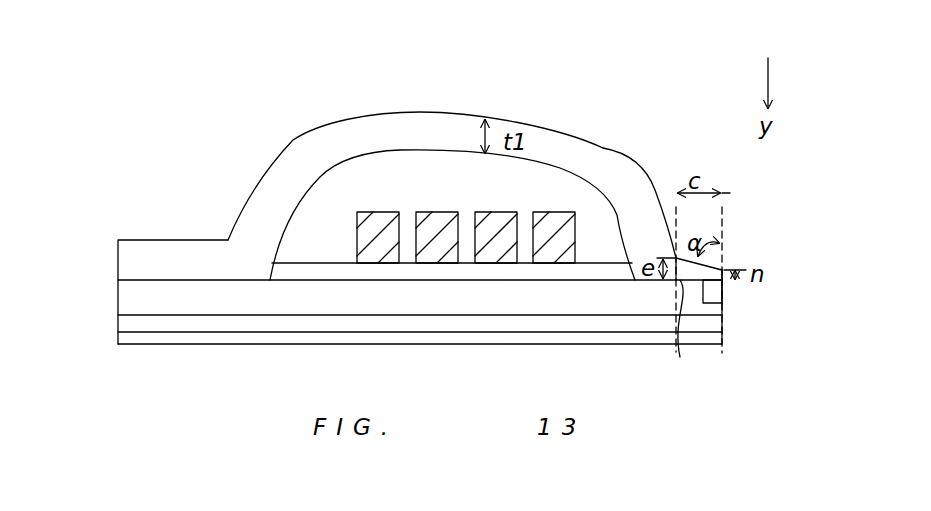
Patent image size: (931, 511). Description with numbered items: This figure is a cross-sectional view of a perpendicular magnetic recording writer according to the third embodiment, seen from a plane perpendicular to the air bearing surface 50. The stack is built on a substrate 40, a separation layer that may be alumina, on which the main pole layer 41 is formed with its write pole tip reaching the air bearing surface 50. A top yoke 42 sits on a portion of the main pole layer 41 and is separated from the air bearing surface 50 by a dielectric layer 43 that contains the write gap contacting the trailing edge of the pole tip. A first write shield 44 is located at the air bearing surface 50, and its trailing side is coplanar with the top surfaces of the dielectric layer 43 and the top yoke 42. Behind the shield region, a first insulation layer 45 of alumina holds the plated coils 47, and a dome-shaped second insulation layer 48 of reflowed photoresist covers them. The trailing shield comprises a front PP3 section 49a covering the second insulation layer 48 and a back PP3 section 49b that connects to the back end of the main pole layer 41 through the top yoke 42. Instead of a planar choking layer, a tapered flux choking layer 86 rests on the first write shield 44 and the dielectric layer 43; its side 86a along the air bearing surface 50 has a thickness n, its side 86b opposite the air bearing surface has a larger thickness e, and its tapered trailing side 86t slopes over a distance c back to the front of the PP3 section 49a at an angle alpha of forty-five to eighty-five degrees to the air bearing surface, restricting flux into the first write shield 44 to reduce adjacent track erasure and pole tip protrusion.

The substrate 40 is at (123, 342).
The main pole layer 41 is at (125, 322).
The top yoke 42 is at (125, 298).
The dielectric layer 43 is at (710, 310).
The first write shield 44 is at (707, 293).
The first insulation layer 45 is at (277, 263).
The coils 47 is at (430, 228).
The second insulation layer 48 is at (373, 167).
The PP3 section 49a is at (632, 157).
The PP3 section 49b is at (123, 253).
The air bearing surface 50 is at (757, 368).
The tapered flux choking layer 86 is at (707, 272).
The side 86a is at (725, 268).
The side 86b is at (684, 335).
The tapered trailing side 86t is at (683, 258).